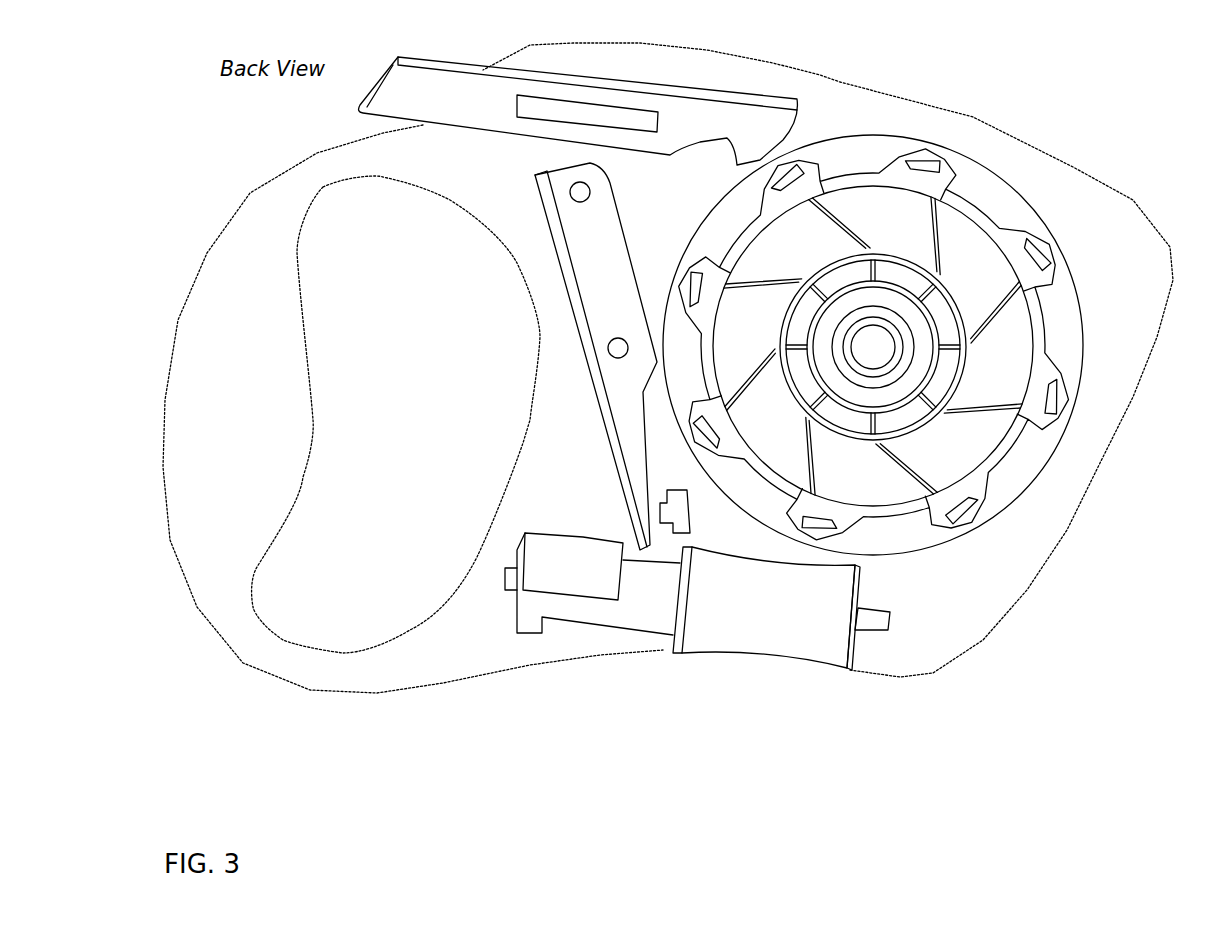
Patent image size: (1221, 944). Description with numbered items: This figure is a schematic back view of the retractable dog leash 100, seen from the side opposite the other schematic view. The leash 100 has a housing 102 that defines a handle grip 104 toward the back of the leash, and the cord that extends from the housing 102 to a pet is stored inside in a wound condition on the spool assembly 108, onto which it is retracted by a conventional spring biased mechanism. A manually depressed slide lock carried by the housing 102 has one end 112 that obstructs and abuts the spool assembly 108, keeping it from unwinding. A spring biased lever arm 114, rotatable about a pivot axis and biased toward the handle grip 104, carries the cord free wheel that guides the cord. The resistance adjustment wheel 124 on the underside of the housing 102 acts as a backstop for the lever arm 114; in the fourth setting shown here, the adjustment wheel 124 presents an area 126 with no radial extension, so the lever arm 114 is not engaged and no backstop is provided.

The dog leash 100 is at (216, 158).
The housing 102 is at (1132, 200).
The handle grip 104 is at (207, 570).
The spool assembly 108 is at (960, 163).
The end of slide lock 112 is at (762, 130).
The lever arm 114 is at (572, 290).
The resistance adjustment wheel 124 is at (748, 645).
The area with no radial extension 126 is at (568, 608).